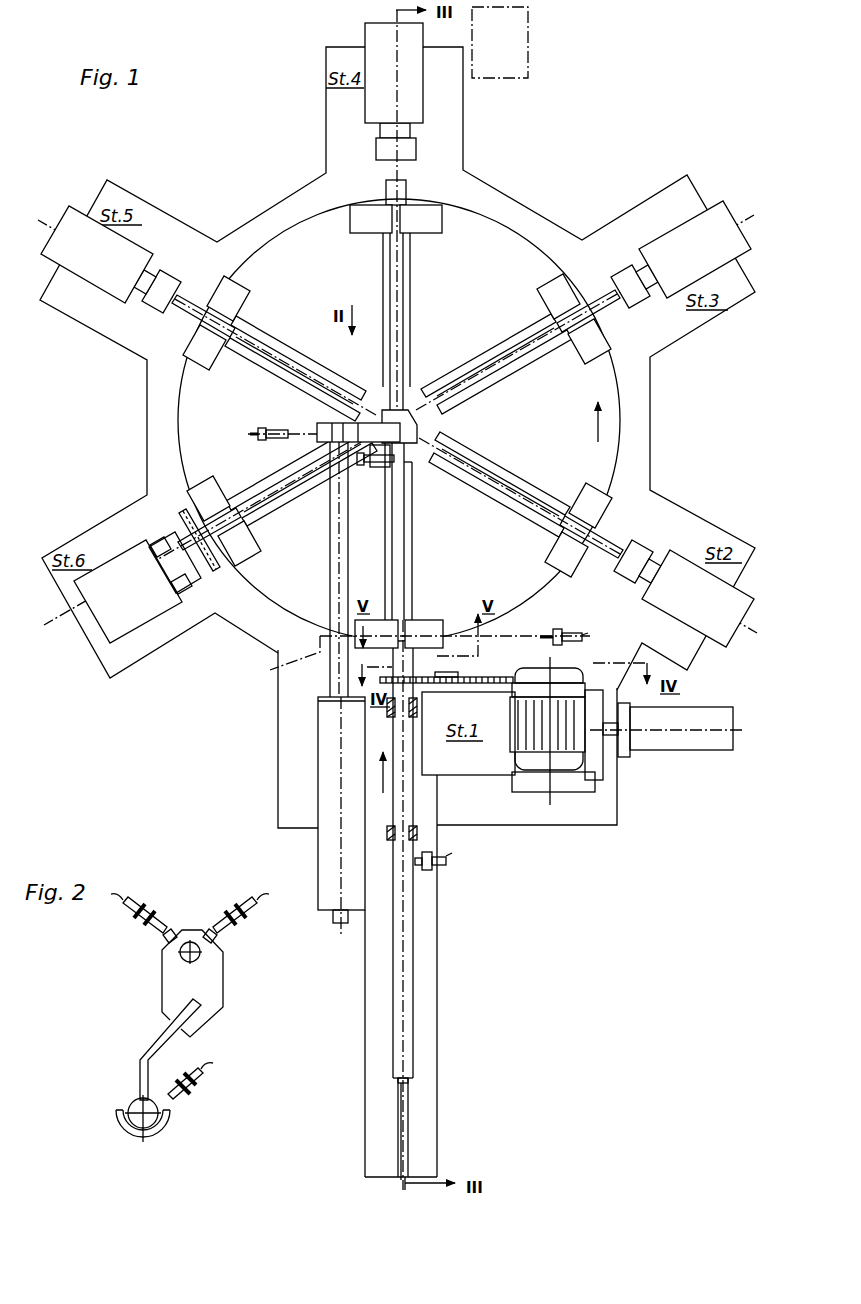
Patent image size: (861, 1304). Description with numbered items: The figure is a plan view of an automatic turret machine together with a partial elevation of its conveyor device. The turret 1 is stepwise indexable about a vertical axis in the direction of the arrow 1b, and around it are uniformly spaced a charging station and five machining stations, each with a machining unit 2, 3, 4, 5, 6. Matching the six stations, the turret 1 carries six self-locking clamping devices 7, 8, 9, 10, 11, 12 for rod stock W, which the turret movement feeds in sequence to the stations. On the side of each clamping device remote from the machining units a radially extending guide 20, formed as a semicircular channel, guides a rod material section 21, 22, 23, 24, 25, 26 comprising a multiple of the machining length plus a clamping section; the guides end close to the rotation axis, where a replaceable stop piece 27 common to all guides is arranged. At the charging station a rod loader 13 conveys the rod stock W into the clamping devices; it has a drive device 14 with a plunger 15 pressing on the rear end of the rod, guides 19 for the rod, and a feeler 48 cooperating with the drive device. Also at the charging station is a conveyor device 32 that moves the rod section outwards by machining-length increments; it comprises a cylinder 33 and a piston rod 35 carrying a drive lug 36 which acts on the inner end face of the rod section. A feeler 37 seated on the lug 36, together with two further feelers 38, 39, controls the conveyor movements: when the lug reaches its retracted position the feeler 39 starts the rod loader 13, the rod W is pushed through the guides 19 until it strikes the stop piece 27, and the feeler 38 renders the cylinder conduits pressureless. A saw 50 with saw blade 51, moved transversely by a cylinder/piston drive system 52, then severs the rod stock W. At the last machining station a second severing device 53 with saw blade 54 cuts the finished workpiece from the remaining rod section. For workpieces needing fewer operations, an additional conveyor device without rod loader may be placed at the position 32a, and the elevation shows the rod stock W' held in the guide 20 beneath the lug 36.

In FIG. 1, the turret 1 is at (487, 245).
In FIG. 1, the indexing direction arrow 1b is at (586, 422).
In FIG. 1, the machining unit 2 is at (740, 603).
In FIG. 1, the machining unit 3 is at (707, 211).
In FIG. 1, the machining unit 4 is at (368, 33).
In FIG. 1, the machining unit 5 is at (77, 222).
In FIG. 1, the machining unit 6 is at (112, 636).
In FIG. 1, the clamping device 7 is at (421, 620).
In FIG. 1, the clamping device 8 is at (597, 522).
In FIG. 1, the clamping device 9 is at (597, 342).
In FIG. 1, the clamping device 10 is at (418, 215).
In FIG. 1, the clamping device 11 is at (228, 300).
In FIG. 1, the clamping device 12 is at (206, 496).
In FIG. 1, the rod loader 13 is at (440, 976).
In FIG. 1, the drive device 14 is at (457, 1127).
In FIG. 1, the plunger 15 is at (410, 1153).
In FIG. 1, the guides 19 is at (386, 707).
In FIG. 1, the radial guide 20 is at (412, 547).
In FIG. 2, the radial guide 20 is at (166, 1120).
In FIG. 1, the rod material section 21 is at (402, 520).
In FIG. 2, the rod material section 21 is at (135, 1105).
In FIG. 1, the rod material section 22 is at (505, 487).
In FIG. 1, the rod material section 23 is at (487, 357).
In FIG. 1, the rod material section 24 is at (405, 306).
In FIG. 1, the rod material section 25 is at (283, 357).
In FIG. 1, the rod material section 26 is at (266, 496).
In FIG. 1, the stop piece 27 is at (418, 429).
In FIG. 1, the conveyor device 32 is at (426, 739).
In FIG. 2, the conveyor device 32 is at (224, 983).
In FIG. 1, the position for second conveyor device 32a is at (517, 23).
In FIG. 1, the cylinder 33 is at (325, 887).
In FIG. 1, the piston rod 35 is at (329, 573).
In FIG. 1, the drive lug 36 is at (320, 425).
In FIG. 2, the drive lug 36 is at (160, 1034).
In FIG. 1, the feeler 37 is at (360, 467).
In FIG. 2, the feeler 37 is at (196, 1078).
In FIG. 1, the feeler 38 is at (262, 428).
In FIG. 2, the feeler 38 is at (238, 900).
In FIG. 1, the feeler 39 is at (575, 631).
In FIG. 2, the feeler 39 is at (138, 900).
In FIG. 1, the feeler 48 is at (440, 867).
In FIG. 1, the saw 50 is at (538, 753).
In FIG. 1, the saw blade 51 is at (498, 677).
In FIG. 1, the cylinder/piston drive system 52 is at (670, 746).
In FIG. 1, the second severing device 53 is at (194, 612).
In FIG. 1, the saw blade 54 is at (214, 573).
In FIG. 1, the rod stock W is at (442, 905).
In FIG. 1, the workpiece position W' is at (421, 666).